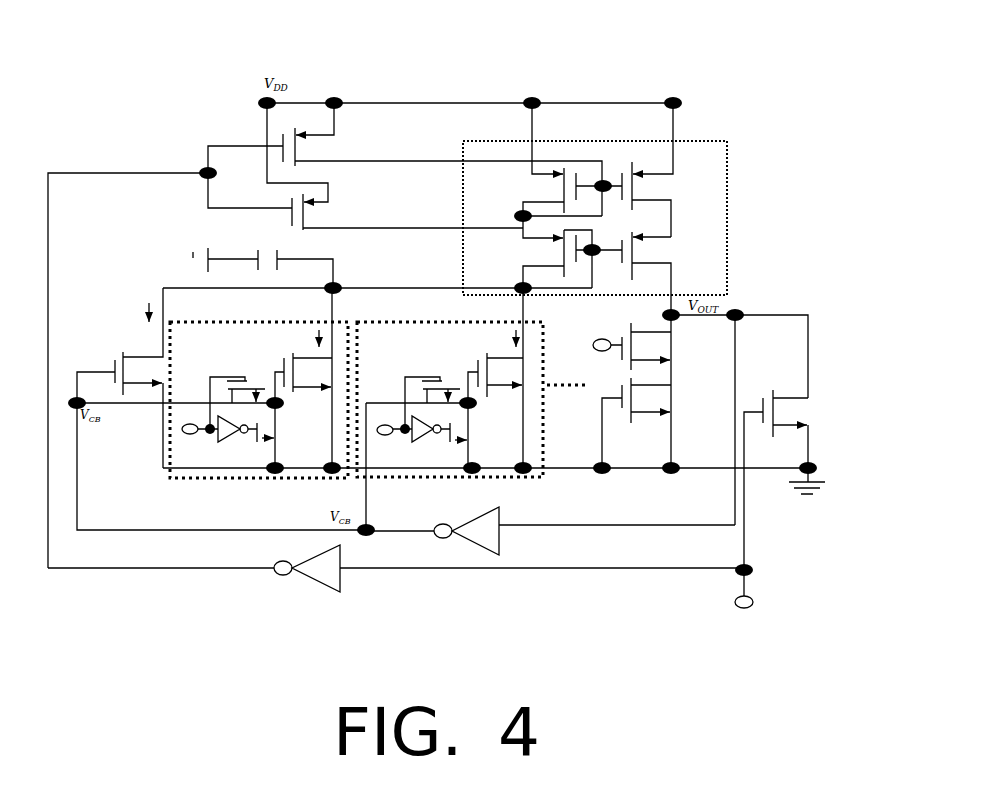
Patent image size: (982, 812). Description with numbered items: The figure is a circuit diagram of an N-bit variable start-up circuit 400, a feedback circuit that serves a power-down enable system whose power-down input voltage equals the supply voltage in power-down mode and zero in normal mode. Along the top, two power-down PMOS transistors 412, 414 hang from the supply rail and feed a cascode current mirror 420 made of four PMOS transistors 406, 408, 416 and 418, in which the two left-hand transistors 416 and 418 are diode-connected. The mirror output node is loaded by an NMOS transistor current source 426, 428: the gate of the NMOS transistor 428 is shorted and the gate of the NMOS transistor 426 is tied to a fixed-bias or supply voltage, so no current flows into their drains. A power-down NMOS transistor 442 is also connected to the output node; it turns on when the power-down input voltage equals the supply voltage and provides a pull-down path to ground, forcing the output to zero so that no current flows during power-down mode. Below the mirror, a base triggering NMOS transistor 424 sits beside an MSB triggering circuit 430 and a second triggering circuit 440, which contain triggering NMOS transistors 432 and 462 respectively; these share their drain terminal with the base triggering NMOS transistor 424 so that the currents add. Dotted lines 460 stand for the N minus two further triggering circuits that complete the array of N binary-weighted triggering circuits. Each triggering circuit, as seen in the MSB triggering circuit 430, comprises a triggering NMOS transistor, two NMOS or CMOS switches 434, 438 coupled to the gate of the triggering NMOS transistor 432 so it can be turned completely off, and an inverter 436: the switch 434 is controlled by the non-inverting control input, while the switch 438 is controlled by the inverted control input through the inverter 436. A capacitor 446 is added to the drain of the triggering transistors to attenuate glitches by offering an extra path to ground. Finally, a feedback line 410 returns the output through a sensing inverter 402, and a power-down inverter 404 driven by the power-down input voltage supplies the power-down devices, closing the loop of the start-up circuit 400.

The N-bit variable start-up circuit 400 is at (447, 31).
The sensing inverter 402 is at (468, 542).
The power-down inverter 404 is at (302, 556).
The transistor MP1 406 is at (677, 175).
The transistor MP2 408 is at (677, 237).
The feedback line 410 is at (714, 522).
The power-down PMOS transistor 412 is at (340, 133).
The power-down PMOS transistor 414 is at (340, 193).
The transistor MP3 416 is at (528, 178).
The transistor MP4 418 is at (528, 247).
The cascode current mirror 420 is at (727, 237).
The base triggering NMOS transistor 424 is at (138, 357).
The NMOS transistor current source 426 is at (693, 351).
The NMOS transistor current source 428 is at (663, 403).
The MSB triggering circuit 430 is at (183, 296).
The triggering NMOS transistor 432 is at (275, 365).
The NMOS (or CMOS) switch 434 is at (242, 375).
The inverter 436 is at (218, 441).
The NMOS (or CMOS) switch 438 is at (275, 433).
The (MSB-1) triggering circuit 440 is at (413, 295).
The power-down NMOS transistor 442 is at (810, 391).
The capacitor 446 is at (265, 248).
The (N-2) triggering circuits 460 is at (553, 372).
The triggering NMOS transistor 462 is at (468, 367).